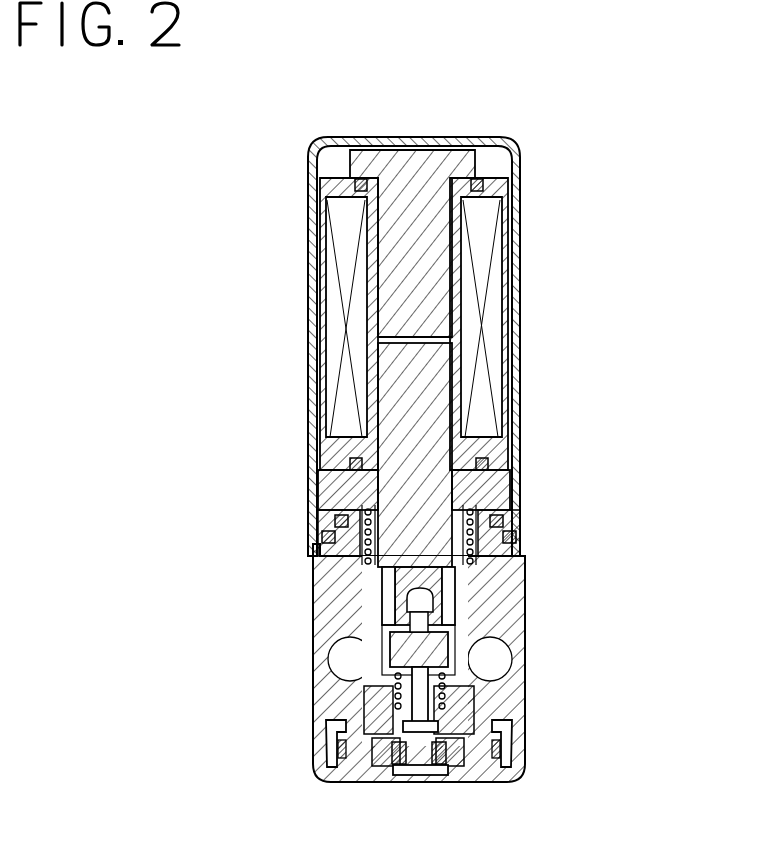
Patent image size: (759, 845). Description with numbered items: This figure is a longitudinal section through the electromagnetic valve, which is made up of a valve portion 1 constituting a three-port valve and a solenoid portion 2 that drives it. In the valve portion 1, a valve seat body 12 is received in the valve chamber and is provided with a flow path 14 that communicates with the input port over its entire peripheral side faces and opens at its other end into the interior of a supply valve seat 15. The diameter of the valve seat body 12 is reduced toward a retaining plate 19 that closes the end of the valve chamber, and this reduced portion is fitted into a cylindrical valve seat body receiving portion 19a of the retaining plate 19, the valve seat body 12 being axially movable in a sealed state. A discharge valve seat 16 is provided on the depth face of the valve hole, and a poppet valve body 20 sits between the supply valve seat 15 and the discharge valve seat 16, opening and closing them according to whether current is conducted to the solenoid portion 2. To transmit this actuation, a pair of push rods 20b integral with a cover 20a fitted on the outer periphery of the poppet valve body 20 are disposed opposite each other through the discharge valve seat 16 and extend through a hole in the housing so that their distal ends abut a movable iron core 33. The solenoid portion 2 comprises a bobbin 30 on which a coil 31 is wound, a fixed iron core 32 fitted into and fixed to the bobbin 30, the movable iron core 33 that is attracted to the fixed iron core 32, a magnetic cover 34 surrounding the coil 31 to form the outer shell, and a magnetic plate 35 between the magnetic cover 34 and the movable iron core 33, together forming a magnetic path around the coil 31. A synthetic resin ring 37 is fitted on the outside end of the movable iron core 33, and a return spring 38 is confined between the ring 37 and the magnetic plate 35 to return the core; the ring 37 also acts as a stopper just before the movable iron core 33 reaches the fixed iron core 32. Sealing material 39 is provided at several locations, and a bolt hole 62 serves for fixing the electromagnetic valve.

The valve portion 1 is at (614, 770).
The solenoid portion 2 is at (575, 112).
The valve seat body 12 is at (352, 738).
The flow path 14 is at (423, 733).
The supply valve seat 15 is at (445, 690).
The discharge valve seat 16 is at (385, 630).
The retaining plate 19 is at (473, 778).
The valve seat body receiving portion 19a is at (398, 772).
The poppet valve body 20 is at (410, 652).
The cover 20a is at (490, 640).
The push rods 20b is at (455, 600).
The bobbin 30 is at (480, 254).
The coil 31 is at (492, 322).
The fixed iron core 32 is at (402, 252).
The movable iron core 33 is at (405, 368).
The magnetic cover 34 is at (417, 136).
The magnetic plate 35 is at (490, 485).
The ring 37 is at (365, 566).
The return spring 38 is at (330, 533).
The sealing material 39 is at (353, 186).
The bolt hole 62 is at (335, 672).